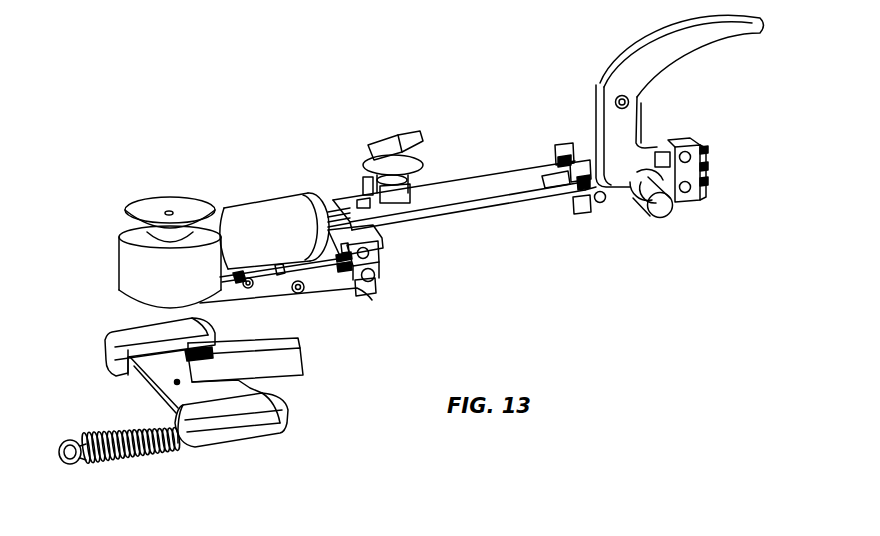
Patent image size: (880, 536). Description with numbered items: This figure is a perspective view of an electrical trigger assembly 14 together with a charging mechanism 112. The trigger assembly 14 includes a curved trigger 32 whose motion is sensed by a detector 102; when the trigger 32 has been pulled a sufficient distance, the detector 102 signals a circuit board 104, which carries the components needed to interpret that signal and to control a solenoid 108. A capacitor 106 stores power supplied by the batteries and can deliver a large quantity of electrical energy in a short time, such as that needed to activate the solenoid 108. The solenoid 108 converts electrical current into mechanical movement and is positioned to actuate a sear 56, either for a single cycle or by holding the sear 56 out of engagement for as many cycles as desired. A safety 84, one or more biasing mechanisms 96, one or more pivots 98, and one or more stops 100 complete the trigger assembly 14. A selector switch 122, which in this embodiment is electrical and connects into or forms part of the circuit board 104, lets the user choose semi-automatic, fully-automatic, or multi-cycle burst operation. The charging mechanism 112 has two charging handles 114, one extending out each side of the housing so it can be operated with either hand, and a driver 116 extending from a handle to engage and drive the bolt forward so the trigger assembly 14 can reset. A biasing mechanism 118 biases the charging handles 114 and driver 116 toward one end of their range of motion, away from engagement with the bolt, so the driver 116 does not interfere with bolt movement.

The trigger assembly 14 is at (95, 264).
The trigger 32 is at (660, 34).
The sear 56 is at (368, 290).
The safety 84 is at (637, 216).
The biasing mechanism 96 is at (343, 272).
The pivot 98 is at (298, 294).
The stop 100 is at (249, 289).
The detector 102 is at (693, 129).
The circuit board 104 is at (515, 182).
The capacitor 106 is at (302, 204).
The solenoid 108 is at (128, 258).
The charging mechanism 112 is at (315, 350).
The charging handle 114 is at (116, 330).
The driver 116 is at (295, 367).
The biasing mechanism 118 is at (147, 456).
The selector switch 122 is at (381, 130).